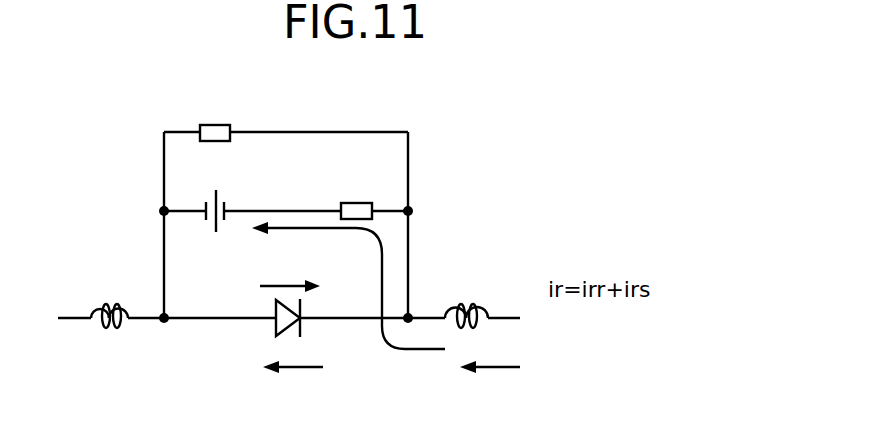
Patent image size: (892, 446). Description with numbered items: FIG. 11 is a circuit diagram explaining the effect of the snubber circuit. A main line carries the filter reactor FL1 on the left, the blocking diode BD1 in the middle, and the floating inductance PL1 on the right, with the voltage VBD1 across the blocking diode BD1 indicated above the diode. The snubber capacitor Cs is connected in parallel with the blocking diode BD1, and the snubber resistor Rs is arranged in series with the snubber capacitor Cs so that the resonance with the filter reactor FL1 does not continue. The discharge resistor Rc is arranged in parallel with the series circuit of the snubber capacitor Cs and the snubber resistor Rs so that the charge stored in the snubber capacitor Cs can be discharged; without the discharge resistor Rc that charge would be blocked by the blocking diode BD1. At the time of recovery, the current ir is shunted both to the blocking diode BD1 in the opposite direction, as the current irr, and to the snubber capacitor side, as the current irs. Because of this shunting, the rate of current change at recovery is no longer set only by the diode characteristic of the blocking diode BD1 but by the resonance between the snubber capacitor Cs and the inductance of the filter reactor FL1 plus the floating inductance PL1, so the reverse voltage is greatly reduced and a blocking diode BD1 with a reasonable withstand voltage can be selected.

The discharge resistor Rc is at (218, 125).
The snubber capacitor Cs is at (216, 191).
The snubber resistor Rs is at (354, 203).
The filter reactor FL1 is at (108, 304).
The floating inductance PL1 is at (462, 305).
The blocking diode BD1 is at (274, 330).
The voltage across the blocking diode VBD1 is at (284, 270).
The current shunted to the snubber capacitor side irs is at (382, 258).
The reverse current through the blocking diode irr is at (293, 379).
The current at the time of recovery ir is at (490, 379).